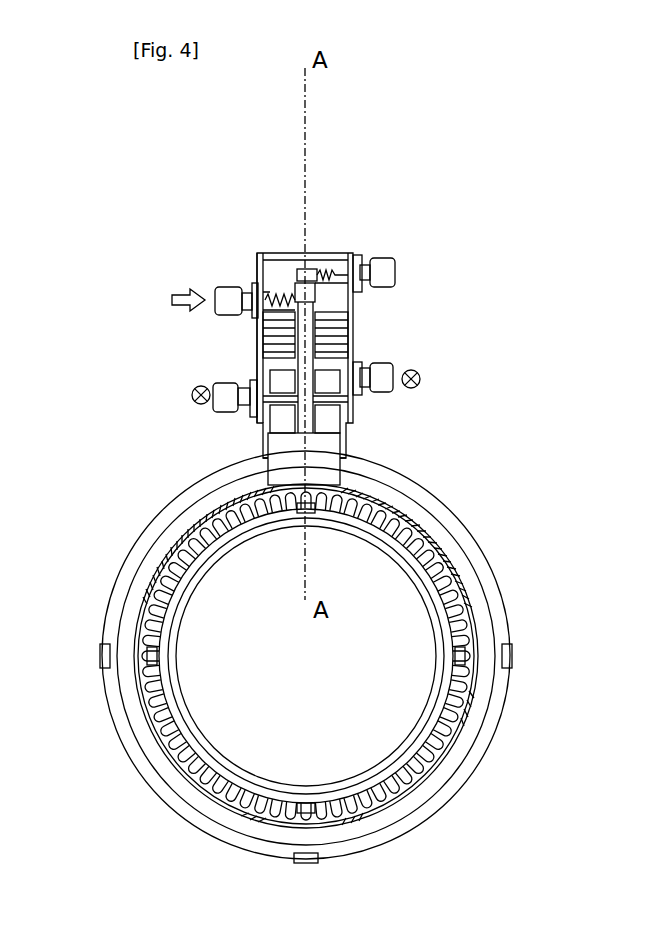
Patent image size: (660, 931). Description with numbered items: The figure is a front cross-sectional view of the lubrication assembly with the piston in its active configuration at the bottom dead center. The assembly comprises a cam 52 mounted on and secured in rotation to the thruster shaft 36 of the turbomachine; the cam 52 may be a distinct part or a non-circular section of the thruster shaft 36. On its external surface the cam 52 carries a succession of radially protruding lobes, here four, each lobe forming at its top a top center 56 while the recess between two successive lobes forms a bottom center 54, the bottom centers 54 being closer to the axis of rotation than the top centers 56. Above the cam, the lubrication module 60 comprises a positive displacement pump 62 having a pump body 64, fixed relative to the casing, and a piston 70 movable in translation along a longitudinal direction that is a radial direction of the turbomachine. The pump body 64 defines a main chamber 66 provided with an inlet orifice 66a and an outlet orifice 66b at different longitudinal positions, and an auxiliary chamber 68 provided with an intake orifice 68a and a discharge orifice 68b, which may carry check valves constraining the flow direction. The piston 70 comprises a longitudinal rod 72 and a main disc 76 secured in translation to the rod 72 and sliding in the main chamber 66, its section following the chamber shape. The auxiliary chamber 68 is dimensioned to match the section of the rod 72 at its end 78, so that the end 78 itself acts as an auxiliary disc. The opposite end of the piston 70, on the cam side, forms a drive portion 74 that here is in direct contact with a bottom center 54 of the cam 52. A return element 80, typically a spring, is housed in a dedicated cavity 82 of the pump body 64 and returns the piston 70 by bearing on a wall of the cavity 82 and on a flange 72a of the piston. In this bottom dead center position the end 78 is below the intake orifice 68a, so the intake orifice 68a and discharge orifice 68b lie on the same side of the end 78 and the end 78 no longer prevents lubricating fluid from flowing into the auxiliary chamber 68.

The thruster shaft 36 is at (192, 658).
The cam 52 is at (138, 552).
The bottom center 54 is at (378, 486).
The top center 56 is at (172, 523).
The lubrication module 60 is at (175, 228).
The positive displacement pump 62 is at (358, 243).
The pump body 64 is at (251, 268).
The main chamber 66 is at (328, 383).
The inlet orifice 66a is at (230, 389).
The outlet orifice 66b is at (383, 375).
The auxiliary chamber 68 is at (313, 299).
The intake orifice 68a is at (173, 300).
The discharge orifice 68b is at (382, 262).
The piston 70 is at (266, 447).
The longitudinal rod 72 is at (310, 378).
The flange 72a is at (280, 342).
The drive portion 74 is at (333, 440).
The main disc 76 is at (283, 405).
The end 78 is at (318, 308).
The return element 80 is at (258, 304).
The cavity 82 is at (265, 336).